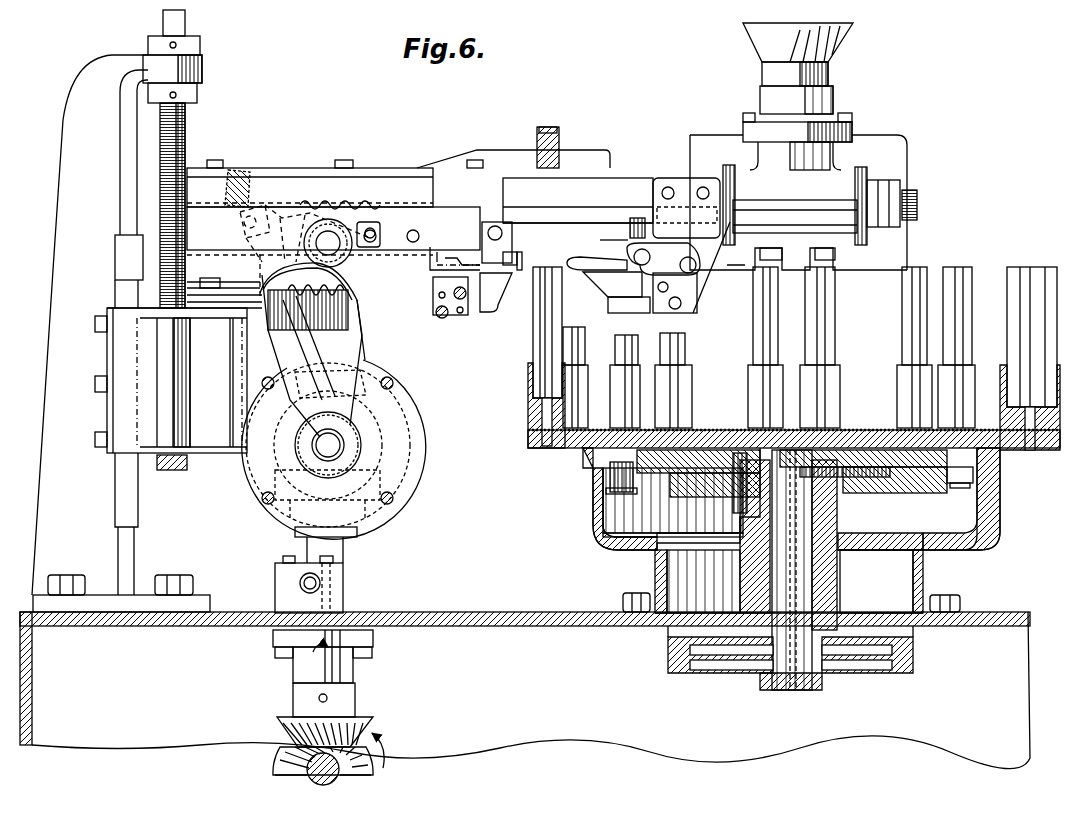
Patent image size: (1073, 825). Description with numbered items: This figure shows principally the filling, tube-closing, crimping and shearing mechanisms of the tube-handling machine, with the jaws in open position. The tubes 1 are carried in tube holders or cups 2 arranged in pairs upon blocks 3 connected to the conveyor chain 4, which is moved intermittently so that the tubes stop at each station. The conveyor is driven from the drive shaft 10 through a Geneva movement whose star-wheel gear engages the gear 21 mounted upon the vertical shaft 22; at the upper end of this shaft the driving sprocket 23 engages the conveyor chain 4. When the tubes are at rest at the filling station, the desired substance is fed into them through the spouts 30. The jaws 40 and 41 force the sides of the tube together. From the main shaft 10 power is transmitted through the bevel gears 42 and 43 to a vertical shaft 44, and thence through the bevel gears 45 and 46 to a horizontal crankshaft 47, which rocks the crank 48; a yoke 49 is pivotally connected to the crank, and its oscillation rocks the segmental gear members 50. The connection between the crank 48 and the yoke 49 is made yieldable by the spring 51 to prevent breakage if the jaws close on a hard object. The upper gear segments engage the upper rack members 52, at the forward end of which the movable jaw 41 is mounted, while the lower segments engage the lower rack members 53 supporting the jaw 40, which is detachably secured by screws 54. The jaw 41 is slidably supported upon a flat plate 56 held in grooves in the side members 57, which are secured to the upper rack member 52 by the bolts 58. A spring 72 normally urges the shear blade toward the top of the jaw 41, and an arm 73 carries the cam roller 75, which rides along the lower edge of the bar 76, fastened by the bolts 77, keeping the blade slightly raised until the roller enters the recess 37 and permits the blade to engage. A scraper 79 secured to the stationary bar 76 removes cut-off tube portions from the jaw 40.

The tubes 1 is at (538, 345).
The tube holders (cups) 2 is at (528, 400).
The blocks 3 is at (575, 452).
The conveyor chain 4 is at (600, 487).
The drive shaft 10 is at (438, 263).
The gear 21 is at (672, 673).
The vertical shaft 22 is at (793, 690).
The driving sprocket 23 is at (948, 483).
The spouts 30 is at (834, 258).
The recess 37 is at (640, 243).
The jaw 40 is at (507, 300).
The jaw 41 is at (600, 280).
The bevel gear 42 is at (280, 752).
The bevel gear 43 is at (283, 722).
The vertical shaft 44 is at (312, 668).
The bevel gear 45 is at (375, 483).
The bevel gear 46 is at (383, 450).
The horizontal crankshaft 47 is at (330, 437).
The crank 48 is at (310, 366).
The yoke 49 is at (294, 210).
The segmental gear members 50 is at (327, 210).
The spring 51 is at (255, 184).
The upper rack members 52 is at (365, 198).
The lower rack members 53 is at (350, 316).
The screws 54 is at (460, 300).
The flat plate 56 is at (698, 310).
The side members 57 is at (703, 290).
The bolts 58 is at (674, 190).
The spring 72 is at (645, 220).
The arm 73 is at (668, 256).
The cam roller 75 is at (735, 222).
The bar 76 is at (578, 234).
The bolts 77 is at (376, 232).
The scraper 79 is at (518, 270).